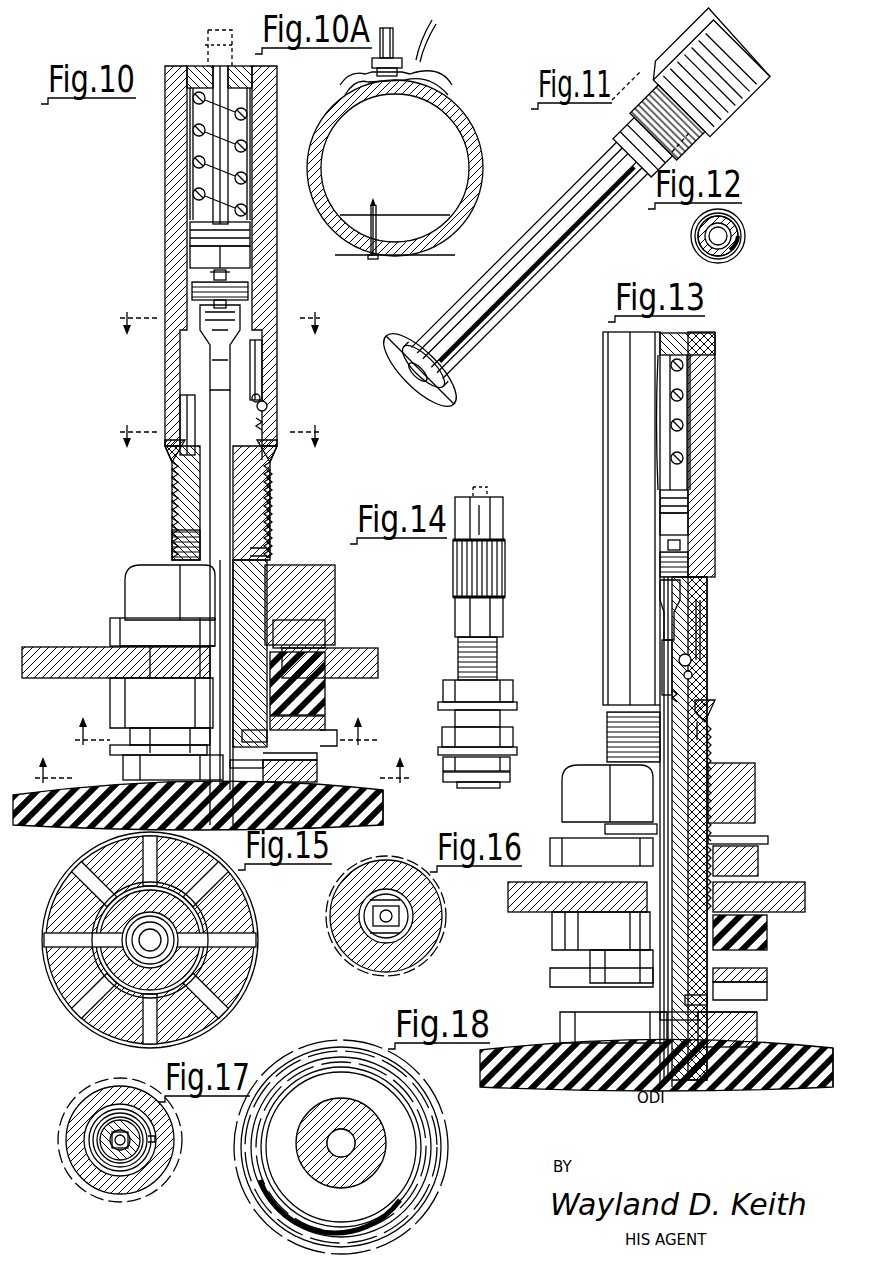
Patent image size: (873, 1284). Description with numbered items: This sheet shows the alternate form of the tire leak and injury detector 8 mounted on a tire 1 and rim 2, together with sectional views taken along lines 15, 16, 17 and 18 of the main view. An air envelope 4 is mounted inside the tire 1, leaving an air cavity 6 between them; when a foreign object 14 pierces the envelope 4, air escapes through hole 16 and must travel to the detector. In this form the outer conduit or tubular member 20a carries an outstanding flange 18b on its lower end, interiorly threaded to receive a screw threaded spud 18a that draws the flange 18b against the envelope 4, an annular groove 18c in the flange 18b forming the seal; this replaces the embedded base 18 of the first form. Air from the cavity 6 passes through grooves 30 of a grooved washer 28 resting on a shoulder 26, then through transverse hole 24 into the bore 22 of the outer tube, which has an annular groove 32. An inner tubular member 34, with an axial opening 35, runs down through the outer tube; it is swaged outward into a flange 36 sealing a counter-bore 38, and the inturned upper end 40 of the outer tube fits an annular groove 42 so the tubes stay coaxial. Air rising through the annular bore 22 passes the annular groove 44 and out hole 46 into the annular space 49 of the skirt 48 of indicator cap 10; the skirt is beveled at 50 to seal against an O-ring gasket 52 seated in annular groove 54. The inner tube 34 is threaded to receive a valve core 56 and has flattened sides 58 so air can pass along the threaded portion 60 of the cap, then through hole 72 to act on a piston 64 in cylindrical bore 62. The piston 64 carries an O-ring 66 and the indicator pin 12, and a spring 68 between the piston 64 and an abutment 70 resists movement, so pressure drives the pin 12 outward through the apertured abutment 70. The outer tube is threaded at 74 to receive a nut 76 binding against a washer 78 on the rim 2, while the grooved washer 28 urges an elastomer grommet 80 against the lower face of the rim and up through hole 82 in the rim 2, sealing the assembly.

In FIG. 10A, the tire 1 is at (470, 208).
In FIG. 10, the rim 2 is at (35, 652).
In FIG. 10A, the rim 2 is at (438, 78).
In FIG. 13, the rim 2 is at (803, 895).
In FIG. 10, the air envelope 4 is at (95, 790).
In FIG. 10A, the air envelope 4 is at (462, 142).
In FIG. 13, the air envelope 4 is at (545, 1048).
In FIG. 10, the air cavity 6 is at (72, 691).
In FIG. 10A, the air cavity 6 is at (367, 73).
In FIG. 13, the air cavity 6 is at (559, 913).
In FIG. 10, the tire leak and injury detector 8 is at (170, 524).
In FIG. 10A, the tire leak and injury detector 8 is at (394, 48).
In FIG. 13, the tire leak and injury detector 8 is at (605, 722).
In FIG. 14, the tire leak and injury detector 8 is at (500, 667).
In FIG. 10, the indicator cap 10 is at (165, 205).
In FIG. 13, the indicator cap 10 is at (603, 430).
In FIG. 14, the indicator cap 10 is at (505, 560).
In FIG. 16, the indicator cap 10 is at (352, 870).
In FIG. 10, the indicator pin 12 is at (212, 48).
In FIG. 11, the indicator pin 12 is at (612, 98).
In FIG. 13, the indicator pin 12 is at (675, 371).
In FIG. 14, the indicator pin 12 is at (490, 492).
In FIG. 10A, the foreign object 14 is at (372, 260).
In FIG. 10, the section line 15 is at (220, 731).
In FIG. 10, the hole 16 is at (217, 317).
In FIG. 10A, the hole 16 is at (372, 224).
In FIG. 10, the section line 17 is at (218, 431).
In FIG. 10, the base 18 is at (224, 772).
In FIG. 10, the screw threaded spud 18a is at (240, 802).
In FIG. 13, the screw threaded spud 18a is at (690, 1047).
In FIG. 14, the screw threaded spud 18a is at (503, 788).
In FIG. 18, the screw threaded spud 18a is at (380, 1153).
In FIG. 10, the outstanding flange 18b is at (330, 766).
In FIG. 13, the outstanding flange 18b is at (730, 1025).
In FIG. 14, the outstanding flange 18b is at (510, 778).
In FIG. 18, the outstanding flange 18b is at (430, 1117).
In FIG. 10, the annular groove 18c is at (395, 808).
In FIG. 13, the annular groove 18c is at (780, 1075).
In FIG. 18, the annular groove 18c is at (425, 1144).
In FIG. 10, the outer conduit or tubular member 20a is at (270, 524).
In FIG. 13, the outer conduit or tubular member 20a is at (705, 862).
In FIG. 14, the outer conduit or tubular member 20a is at (460, 664).
In FIG. 15, the outer conduit or tubular member 20a is at (202, 956).
In FIG. 17, the outer conduit or tubular member 20a is at (93, 1126).
In FIG. 10, the bore 22 is at (250, 556).
In FIG. 13, the bore 22 is at (680, 839).
In FIG. 15, the bore 22 is at (202, 920).
In FIG. 17, the bore 22 is at (100, 1141).
In FIG. 10, the transverse hole 24 is at (267, 741).
In FIG. 13, the transverse hole 24 is at (708, 1000).
In FIG. 15, the transverse hole 24 is at (258, 940).
In FIG. 10, the shoulder 26 is at (155, 752).
In FIG. 10, the grooved washer 28 is at (325, 728).
In FIG. 13, the grooved washer 28 is at (760, 968).
In FIG. 14, the grooved washer 28 is at (515, 746).
In FIG. 15, the grooved washer 28 is at (236, 974).
In FIG. 10, the grooves 30 is at (140, 728).
In FIG. 13, the grooves 30 is at (750, 990).
In FIG. 14, the grooves 30 is at (450, 760).
In FIG. 15, the grooves 30 is at (143, 854).
In FIG. 10, the annular groove 32 is at (222, 738).
In FIG. 11, the annular groove 32 is at (452, 347).
In FIG. 13, the annular groove 32 is at (658, 970).
In FIG. 15, the annular groove 32 is at (124, 922).
In FIG. 10, the inner tubular member 34 is at (205, 545).
In FIG. 11, the inner tubular member 34 is at (500, 334).
In FIG. 12, the inner tubular member 34 is at (705, 244).
In FIG. 13, the inner tubular member 34 is at (680, 762).
In FIG. 15, the inner tubular member 34 is at (135, 946).
In FIG. 17, the inner tubular member 34 is at (138, 1142).
In FIG. 10, the axial opening 35 is at (220, 566).
In FIG. 11, the axial opening 35 is at (393, 382).
In FIG. 12, the axial opening 35 is at (727, 234).
In FIG. 13, the axial opening 35 is at (665, 815).
In FIG. 15, the axial opening 35 is at (138, 940).
In FIG. 18, the axial opening 35 is at (345, 1135).
In FIG. 10, the flange 36 is at (305, 777).
In FIG. 11, the flange 36 is at (438, 407).
In FIG. 13, the flange 36 is at (700, 1030).
In FIG. 10, the counter-bore 38 is at (230, 763).
In FIG. 13, the counter-bore 38 is at (672, 1031).
In FIG. 10, the inturned upper end 40 is at (255, 394).
In FIG. 13, the inturned upper end 40 is at (690, 661).
In FIG. 10, the annular groove 42 is at (262, 406).
In FIG. 11, the annular groove 42 is at (688, 127).
In FIG. 13, the annular groove 42 is at (690, 676).
In FIG. 10, the annular groove 44 is at (185, 421).
In FIG. 11, the annular groove 44 is at (647, 104).
In FIG. 12, the annular groove 44 is at (698, 232).
In FIG. 13, the annular groove 44 is at (665, 690).
In FIG. 17, the annular groove 44 is at (106, 1145).
In FIG. 10, the hole 46 is at (259, 425).
In FIG. 13, the hole 46 is at (670, 696).
In FIG. 17, the hole 46 is at (150, 1138).
In FIG. 10, the skirt 48 is at (260, 360).
In FIG. 13, the skirt 48 is at (705, 622).
In FIG. 17, the skirt 48 is at (93, 1102).
In FIG. 10, the annular space 49 is at (257, 374).
In FIG. 13, the annular space 49 is at (700, 640).
In FIG. 10, the bevel 50 is at (169, 447).
In FIG. 13, the bevel 50 is at (705, 712).
In FIG. 10, the O-ring gasket 52 is at (262, 450).
In FIG. 13, the O-ring gasket 52 is at (697, 730).
In FIG. 10, the annular groove 54 is at (175, 468).
In FIG. 13, the annular groove 54 is at (700, 722).
In FIG. 10, the valve core 56 is at (212, 372).
In FIG. 13, the valve core 56 is at (700, 601).
In FIG. 16, the valve core 56 is at (395, 913).
In FIG. 17, the valve core 56 is at (130, 1151).
In FIG. 11, the flattened sides 58 is at (695, 46).
In FIG. 16, the flattened sides 58 is at (388, 895).
In FIG. 10, the threaded portion 60 is at (196, 298).
In FIG. 13, the threaded portion 60 is at (690, 572).
In FIG. 10, the cylindrical bore 62 is at (250, 107).
In FIG. 13, the cylindrical bore 62 is at (688, 430).
In FIG. 10, the piston 64 is at (250, 258).
In FIG. 13, the piston 64 is at (690, 525).
In FIG. 10, the packing member or O-ring 66 is at (250, 242).
In FIG. 13, the packing member or O-ring 66 is at (690, 502).
In FIG. 10, the spring 68 is at (196, 173).
In FIG. 13, the spring 68 is at (680, 458).
In FIG. 10, the abutment 70 is at (193, 72).
In FIG. 13, the abutment 70 is at (703, 344).
In FIG. 10, the hole 72 is at (206, 278).
In FIG. 13, the hole 72 is at (675, 548).
In FIG. 10, the threaded portion 74 is at (265, 544).
In FIG. 13, the threaded portion 74 is at (605, 829).
In FIG. 10, the nut 76 is at (305, 600).
In FIG. 13, the nut 76 is at (745, 804).
In FIG. 14, the nut 76 is at (515, 694).
In FIG. 10, the washer 78 is at (320, 625).
In FIG. 14, the washer 78 is at (515, 708).
In FIG. 10, the elastomer grommet 80 is at (305, 700).
In FIG. 13, the elastomer grommet 80 is at (760, 930).
In FIG. 14, the elastomer grommet 80 is at (445, 735).
In FIG. 10, the hole 82 is at (175, 646).
In FIG. 13, the hole 82 is at (600, 930).